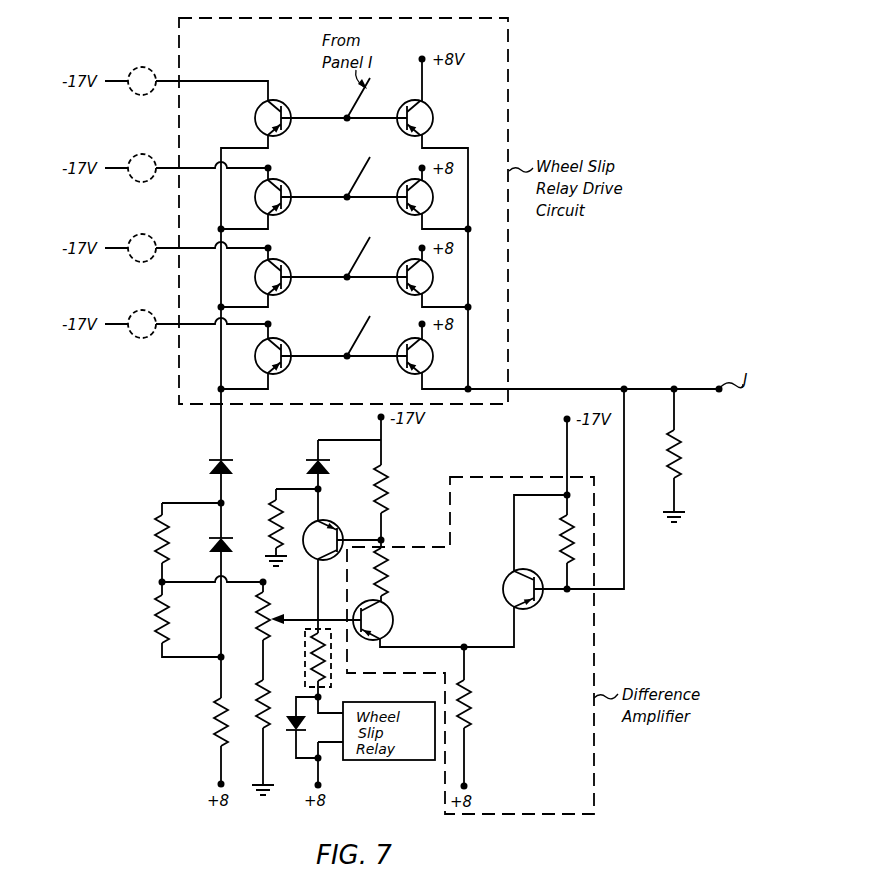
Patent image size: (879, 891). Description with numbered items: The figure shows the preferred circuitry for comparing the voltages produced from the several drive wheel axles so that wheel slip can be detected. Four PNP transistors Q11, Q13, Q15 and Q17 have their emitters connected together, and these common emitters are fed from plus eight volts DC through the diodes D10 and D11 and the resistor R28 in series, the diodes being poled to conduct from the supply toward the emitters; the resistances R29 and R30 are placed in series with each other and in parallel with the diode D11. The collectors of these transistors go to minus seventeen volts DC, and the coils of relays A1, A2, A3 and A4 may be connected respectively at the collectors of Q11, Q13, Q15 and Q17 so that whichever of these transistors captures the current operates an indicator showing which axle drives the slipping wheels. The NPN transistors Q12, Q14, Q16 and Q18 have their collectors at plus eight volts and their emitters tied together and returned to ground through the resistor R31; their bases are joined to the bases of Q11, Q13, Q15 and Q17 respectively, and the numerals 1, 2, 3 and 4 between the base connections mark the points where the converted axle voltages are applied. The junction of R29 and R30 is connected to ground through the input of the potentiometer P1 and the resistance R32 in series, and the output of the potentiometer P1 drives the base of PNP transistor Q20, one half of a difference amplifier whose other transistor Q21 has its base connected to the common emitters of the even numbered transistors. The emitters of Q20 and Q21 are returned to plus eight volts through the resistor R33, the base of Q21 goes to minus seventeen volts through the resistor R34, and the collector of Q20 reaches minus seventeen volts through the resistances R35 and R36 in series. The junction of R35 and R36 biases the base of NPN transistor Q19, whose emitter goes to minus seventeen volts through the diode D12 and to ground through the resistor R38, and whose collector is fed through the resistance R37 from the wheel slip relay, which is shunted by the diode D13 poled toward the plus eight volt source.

The relay coil A1 is at (186, 84).
The relay coil A2 is at (188, 168).
The relay coil A3 is at (188, 248).
The relay coil A4 is at (188, 324).
The point of connection 1 is at (344, 100).
The point of connection 2 is at (344, 179).
The point of connection 3 is at (344, 259).
The point of connection 4 is at (344, 338).
The PNP transistor Q11 is at (287, 131).
The NPN transistor Q12 is at (401, 131).
The PNP transistor Q13 is at (287, 210).
The NPN transistor Q14 is at (401, 210).
The PNP transistor Q15 is at (287, 290).
The NPN transistor Q16 is at (401, 290).
The PNP transistor Q17 is at (287, 369).
The NPN transistor Q18 is at (401, 369).
The NPN transistor Q19 is at (332, 522).
The PNP transistor Q20 is at (393, 612).
The transistor Q21 is at (532, 607).
The diode D10 is at (228, 462).
The diode D11 is at (228, 540).
The diode D12 is at (314, 458).
The diode D13 is at (292, 733).
The resistor R28 is at (214, 726).
The resistance R29 is at (155, 543).
The resistance R30 is at (155, 623).
The resistor R31 is at (681, 440).
The resistance R32 is at (256, 705).
The resistor R33 is at (471, 689).
The resistor R34 is at (560, 528).
The resistance R35 is at (388, 573).
The resistance R36 is at (388, 473).
The resistance R37 is at (311, 655).
The resistor R38 is at (270, 510).
The potentiometer P1 is at (256, 626).